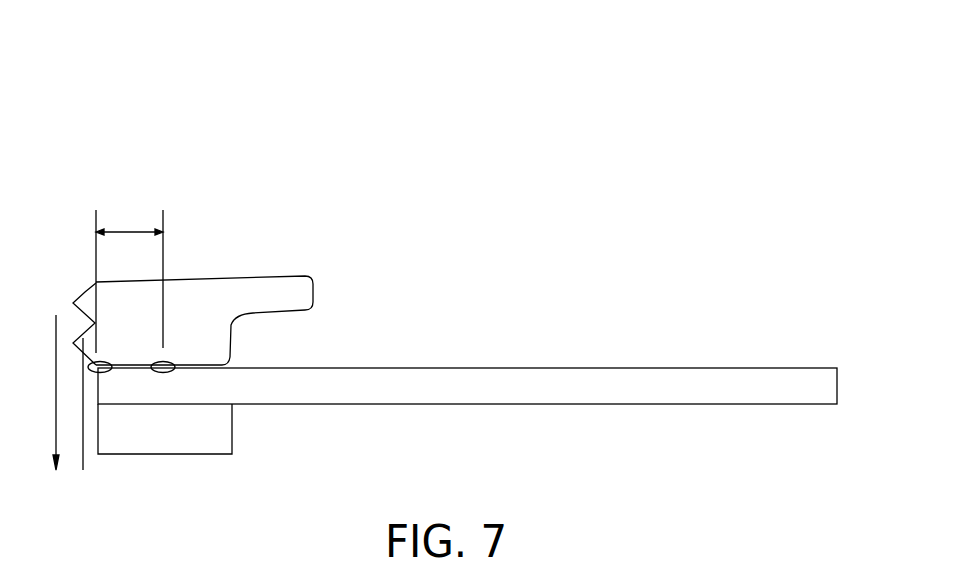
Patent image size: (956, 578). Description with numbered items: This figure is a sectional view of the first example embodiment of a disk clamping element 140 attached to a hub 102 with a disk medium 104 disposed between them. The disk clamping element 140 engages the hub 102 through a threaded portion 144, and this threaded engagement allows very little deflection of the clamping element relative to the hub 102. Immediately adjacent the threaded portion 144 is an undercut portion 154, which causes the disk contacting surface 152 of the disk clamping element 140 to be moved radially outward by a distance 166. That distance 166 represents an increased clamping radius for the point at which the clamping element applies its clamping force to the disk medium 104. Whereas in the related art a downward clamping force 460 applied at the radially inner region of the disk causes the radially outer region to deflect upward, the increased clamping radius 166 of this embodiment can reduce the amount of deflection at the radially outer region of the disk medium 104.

The distance 166 is at (129, 232).
The disk clamping element 140 is at (273, 293).
The disk medium 104 is at (527, 390).
The hub 102 is at (228, 418).
The undercut portion 154 is at (100, 367).
The disk contacting surface 152 is at (163, 367).
The threaded portion 144 is at (83, 470).
The downward clamping force 460 is at (62, 453).